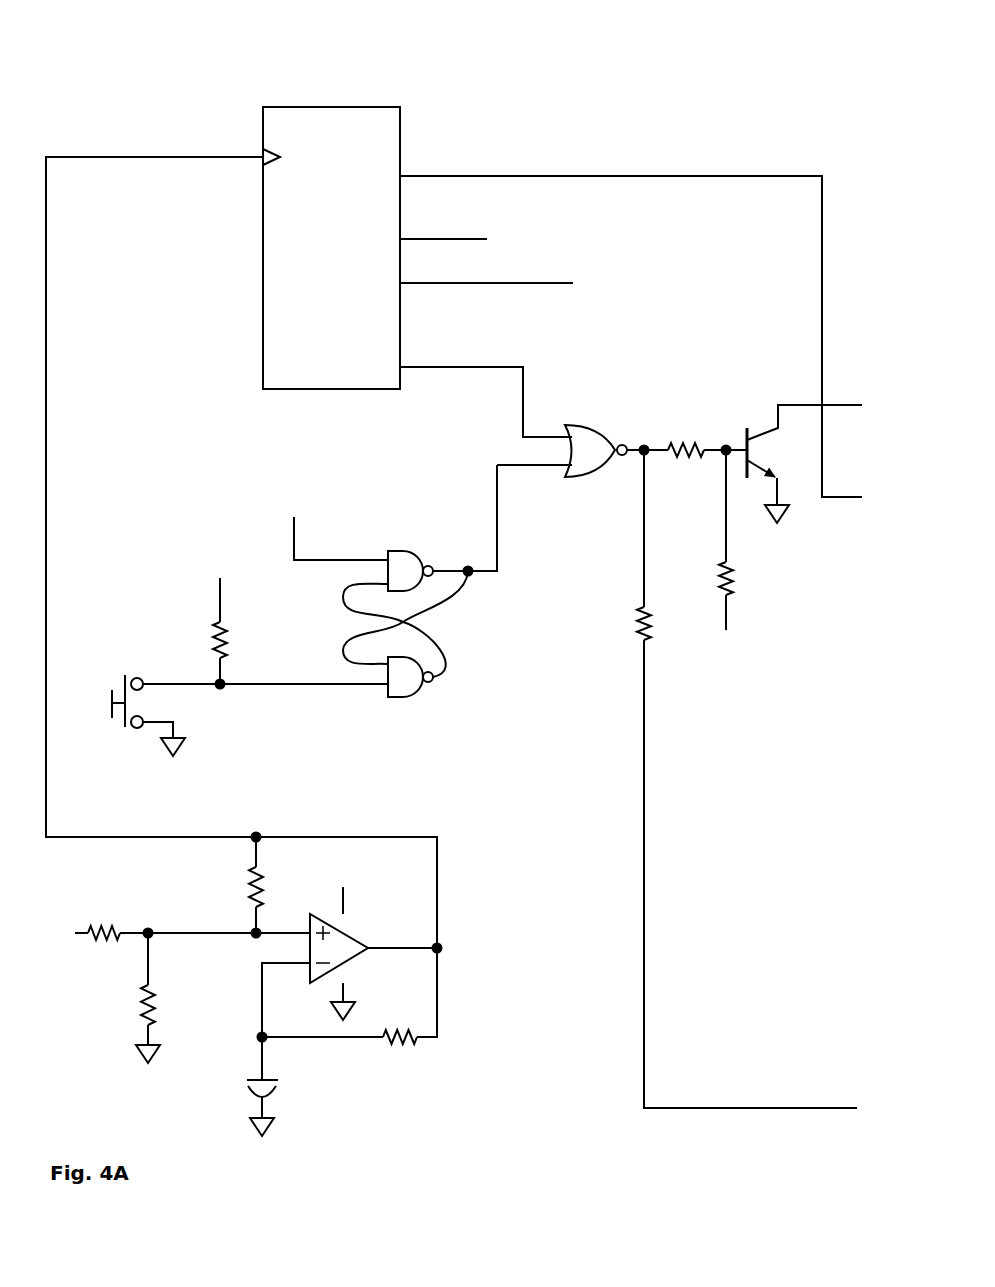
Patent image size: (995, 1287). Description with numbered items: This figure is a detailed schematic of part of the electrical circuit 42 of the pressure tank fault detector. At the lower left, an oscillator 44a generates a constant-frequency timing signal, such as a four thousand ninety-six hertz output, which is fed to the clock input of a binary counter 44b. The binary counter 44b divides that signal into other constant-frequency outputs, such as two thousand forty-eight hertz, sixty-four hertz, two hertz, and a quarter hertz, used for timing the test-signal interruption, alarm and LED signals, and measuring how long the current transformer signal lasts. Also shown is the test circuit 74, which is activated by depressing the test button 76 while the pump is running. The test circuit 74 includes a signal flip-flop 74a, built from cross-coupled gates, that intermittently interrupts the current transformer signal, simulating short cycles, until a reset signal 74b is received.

The electrical circuit 42 is at (799, 86).
The oscillator 44a is at (408, 1058).
The binary counter 44b is at (418, 138).
The test circuit 74 is at (225, 497).
The signal flip-flop 74a is at (452, 678).
The reset signal 74b is at (302, 483).
The test button 76 is at (104, 711).